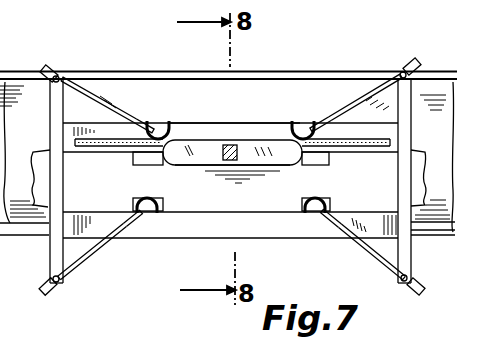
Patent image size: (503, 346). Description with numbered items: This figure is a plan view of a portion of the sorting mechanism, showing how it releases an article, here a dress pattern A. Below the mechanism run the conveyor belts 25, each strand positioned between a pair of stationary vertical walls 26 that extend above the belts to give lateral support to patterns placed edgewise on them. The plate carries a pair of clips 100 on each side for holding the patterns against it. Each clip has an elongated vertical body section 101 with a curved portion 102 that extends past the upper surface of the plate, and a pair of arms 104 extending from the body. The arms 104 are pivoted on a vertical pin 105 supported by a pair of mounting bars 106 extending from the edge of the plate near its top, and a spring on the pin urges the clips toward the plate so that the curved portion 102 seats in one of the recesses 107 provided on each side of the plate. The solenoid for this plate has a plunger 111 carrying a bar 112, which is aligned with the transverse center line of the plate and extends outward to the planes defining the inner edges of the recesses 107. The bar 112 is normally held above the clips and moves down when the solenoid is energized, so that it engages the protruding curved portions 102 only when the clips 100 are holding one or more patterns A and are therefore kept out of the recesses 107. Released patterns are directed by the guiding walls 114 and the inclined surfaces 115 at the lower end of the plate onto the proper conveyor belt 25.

The conveyor belt 25 is at (443, 108).
The stationary vertical wall 26 is at (291, 61).
The clip 100 is at (118, 98).
The elongated vertical body section 101 is at (152, 120).
The curved portion 102 is at (153, 128).
The arm 104 is at (84, 91).
The vertical pin 105 is at (73, 59).
The mounting bar 106 is at (57, 256).
The recess 107 is at (146, 165).
The plunger 111 is at (238, 146).
The bar 112 is at (177, 168).
The guiding wall 114 is at (75, 128).
The inclined surface 115 is at (271, 134).
The dress pattern A is at (192, 128).